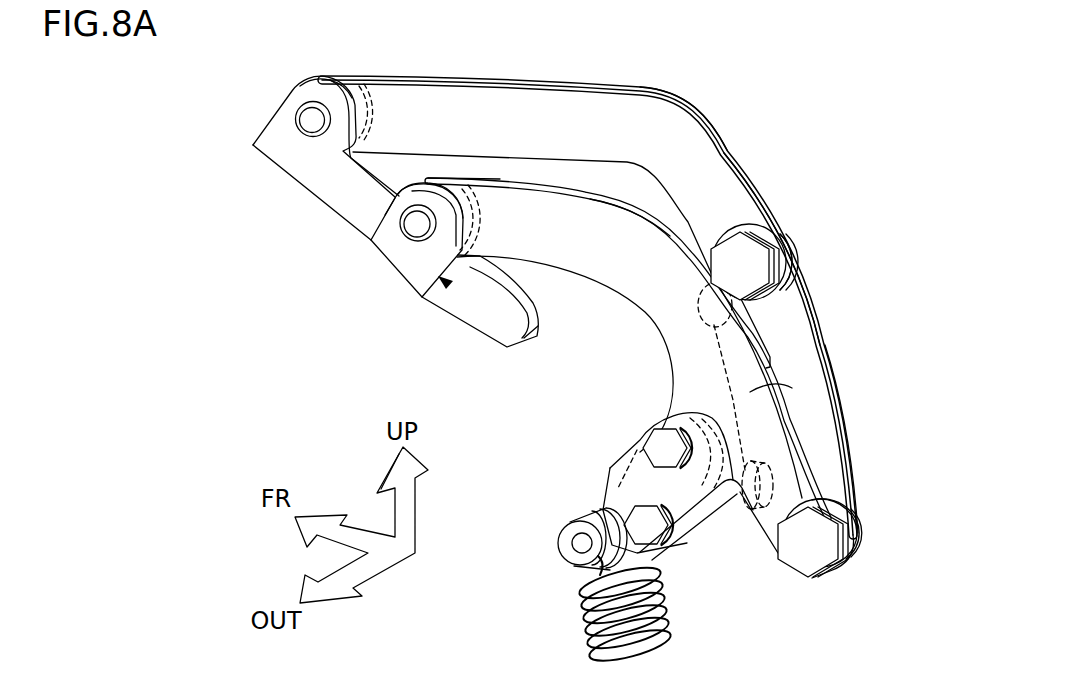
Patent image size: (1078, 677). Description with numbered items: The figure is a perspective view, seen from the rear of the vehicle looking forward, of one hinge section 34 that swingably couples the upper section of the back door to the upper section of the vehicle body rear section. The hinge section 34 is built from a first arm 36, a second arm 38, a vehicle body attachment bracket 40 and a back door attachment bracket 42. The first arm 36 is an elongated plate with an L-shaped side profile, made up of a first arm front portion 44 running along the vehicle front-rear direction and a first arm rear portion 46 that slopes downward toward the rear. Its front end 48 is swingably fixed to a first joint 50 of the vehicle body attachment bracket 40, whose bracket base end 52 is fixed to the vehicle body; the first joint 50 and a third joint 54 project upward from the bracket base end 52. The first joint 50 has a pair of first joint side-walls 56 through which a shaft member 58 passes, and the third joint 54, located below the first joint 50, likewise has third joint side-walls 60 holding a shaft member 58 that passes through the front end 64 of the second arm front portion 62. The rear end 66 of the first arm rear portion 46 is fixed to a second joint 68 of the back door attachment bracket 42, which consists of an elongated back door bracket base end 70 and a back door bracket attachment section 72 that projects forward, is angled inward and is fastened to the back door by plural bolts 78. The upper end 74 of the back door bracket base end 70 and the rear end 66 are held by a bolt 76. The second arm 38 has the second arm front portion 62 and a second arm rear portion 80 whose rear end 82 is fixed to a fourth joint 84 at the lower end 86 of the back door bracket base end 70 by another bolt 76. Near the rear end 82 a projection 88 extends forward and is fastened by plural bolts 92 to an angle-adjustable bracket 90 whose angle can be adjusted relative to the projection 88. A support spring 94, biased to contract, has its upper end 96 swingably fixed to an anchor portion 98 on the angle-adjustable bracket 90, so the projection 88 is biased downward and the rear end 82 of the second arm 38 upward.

The hinge section 34 is at (815, 211).
The first arm 36 is at (683, 98).
The second arm 38 is at (633, 194).
The vehicle body attachment bracket 40 is at (469, 330).
The back door attachment bracket 42 is at (833, 352).
The first arm front portion 44 is at (511, 96).
The first arm rear portion 46 is at (720, 177).
The front end 48 is at (338, 73).
The first joint 50 is at (292, 75).
The bracket base end 52 is at (540, 322).
The third joint 54 is at (409, 170).
The first joint side-walls 56 is at (377, 97).
The shaft member 58 is at (313, 128).
The third joint side-walls 60 is at (490, 213).
The second arm front portion 62 is at (548, 203).
The front end 64 is at (458, 182).
The rear end 66 is at (752, 214).
The second joint 68 is at (806, 250).
The back door bracket base end 70 is at (793, 326).
The back door bracket attachment section 72 is at (737, 377).
The upper end 74 is at (787, 287).
The bolt 76 is at (727, 244).
The bolts 78 is at (697, 323).
The second arm rear portion 80 is at (750, 390).
The rear end 82 is at (823, 498).
The fourth joint 84 is at (868, 553).
The lower end 86 is at (842, 516).
The projection 88 is at (636, 455).
The angle-adjustable bracket 90 is at (606, 504).
The bolts 92 is at (656, 520).
The support spring 94 is at (670, 617).
The upper end 96 is at (592, 577).
The anchor portion 98 is at (575, 527).